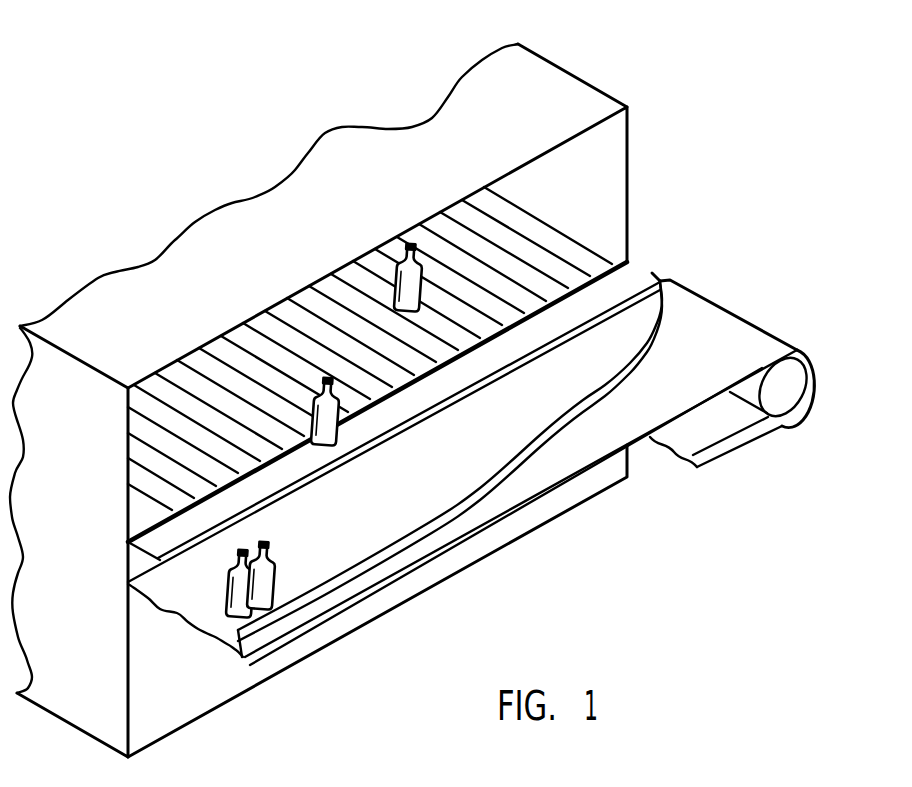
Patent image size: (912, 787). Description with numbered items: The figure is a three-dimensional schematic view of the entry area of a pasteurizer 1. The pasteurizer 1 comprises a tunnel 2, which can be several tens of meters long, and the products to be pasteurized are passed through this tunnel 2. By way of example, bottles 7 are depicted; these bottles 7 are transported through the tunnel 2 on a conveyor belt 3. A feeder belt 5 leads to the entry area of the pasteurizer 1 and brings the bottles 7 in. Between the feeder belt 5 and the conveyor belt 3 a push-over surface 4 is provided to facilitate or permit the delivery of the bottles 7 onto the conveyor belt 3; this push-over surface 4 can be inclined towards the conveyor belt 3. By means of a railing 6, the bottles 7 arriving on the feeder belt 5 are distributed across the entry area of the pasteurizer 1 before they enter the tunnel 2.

The pasteurizer 1 is at (413, 386).
The tunnel 2 is at (613, 137).
The conveyor belt 3 is at (510, 227).
The push-over surface 4 is at (630, 262).
The feeder belt 5 is at (703, 323).
The railing 6 is at (590, 398).
The bottles 7 is at (326, 377).